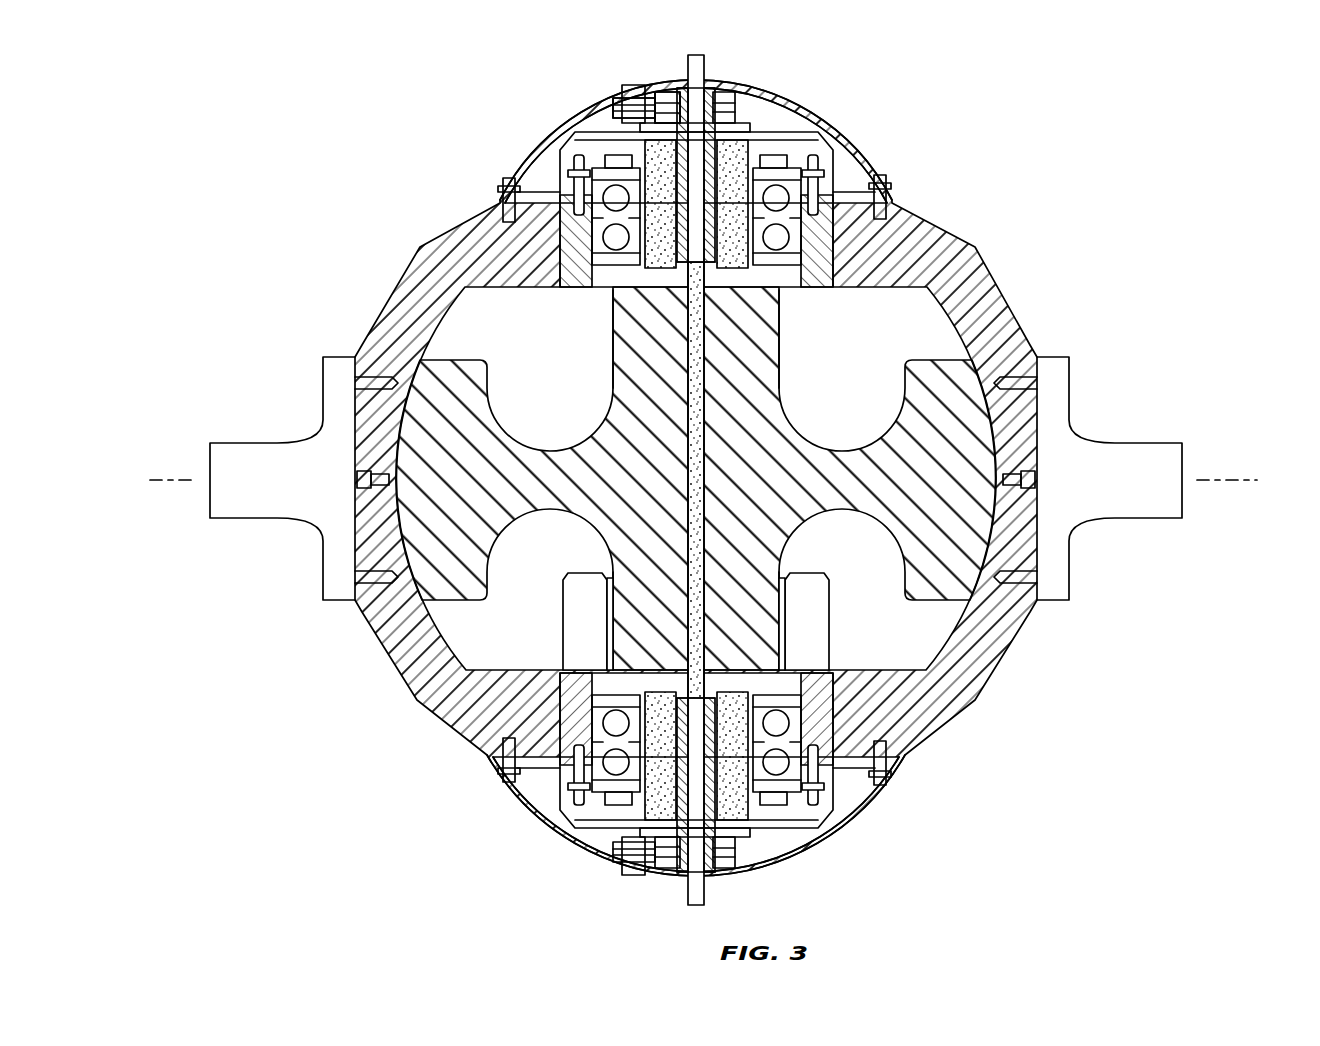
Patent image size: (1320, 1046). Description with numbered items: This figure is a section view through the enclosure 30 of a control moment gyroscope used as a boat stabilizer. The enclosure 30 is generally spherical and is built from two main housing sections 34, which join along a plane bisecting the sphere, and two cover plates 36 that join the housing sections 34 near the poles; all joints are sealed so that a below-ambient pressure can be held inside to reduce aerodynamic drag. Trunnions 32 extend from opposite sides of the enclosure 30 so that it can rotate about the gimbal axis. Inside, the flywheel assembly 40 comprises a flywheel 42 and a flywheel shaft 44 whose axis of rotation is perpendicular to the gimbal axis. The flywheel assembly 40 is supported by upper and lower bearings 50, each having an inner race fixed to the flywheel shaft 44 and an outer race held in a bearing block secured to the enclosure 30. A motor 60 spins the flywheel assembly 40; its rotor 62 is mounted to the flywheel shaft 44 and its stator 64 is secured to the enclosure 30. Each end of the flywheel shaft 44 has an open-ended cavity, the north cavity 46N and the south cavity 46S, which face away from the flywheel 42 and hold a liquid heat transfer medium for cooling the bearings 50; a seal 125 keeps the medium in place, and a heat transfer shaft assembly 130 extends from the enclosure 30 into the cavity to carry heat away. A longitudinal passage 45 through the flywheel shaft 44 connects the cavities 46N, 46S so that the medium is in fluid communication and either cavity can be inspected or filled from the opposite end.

The enclosure 30 is at (703, 479).
The trunnion 32 is at (283, 460).
The main housing section 34 is at (960, 270).
The cover plate 36 is at (537, 163).
The flywheel assembly 40 is at (663, 474).
The flywheel 42 is at (967, 583).
The flywheel shaft 44 is at (645, 350).
The longitudinal passage 45 is at (700, 362).
The north cavity 46N is at (735, 195).
The south cavity 46S is at (735, 780).
The bearing 50 is at (578, 237).
The motor 60 is at (599, 609).
The rotor 62 is at (618, 598).
The stator 64 is at (577, 578).
The seal 125 is at (728, 135).
The heat transfer shaft assembly 130 is at (680, 137).